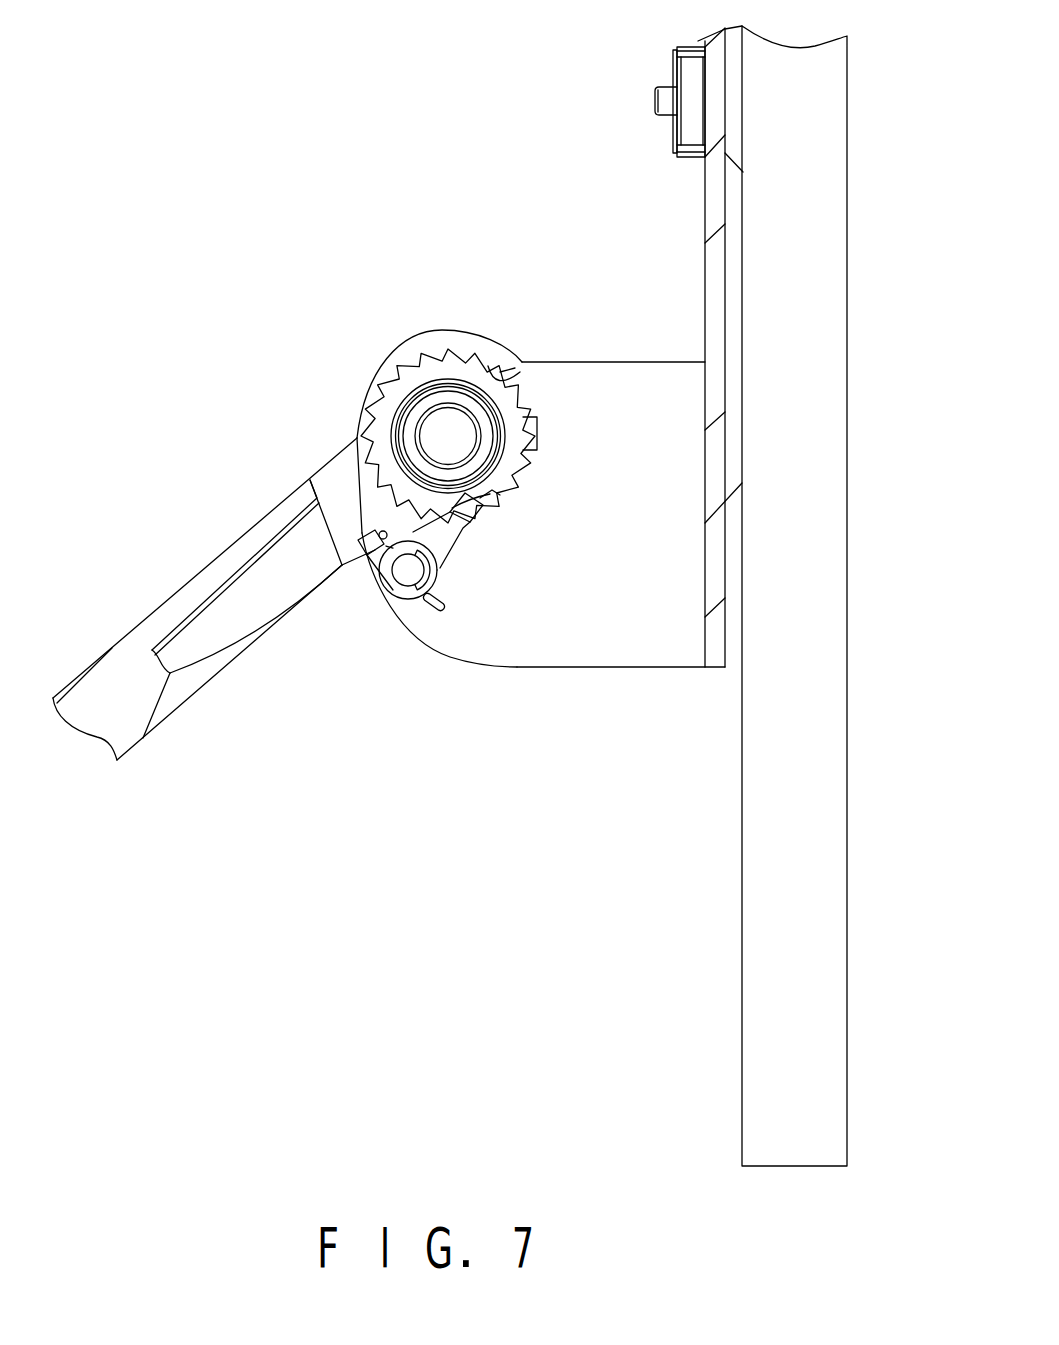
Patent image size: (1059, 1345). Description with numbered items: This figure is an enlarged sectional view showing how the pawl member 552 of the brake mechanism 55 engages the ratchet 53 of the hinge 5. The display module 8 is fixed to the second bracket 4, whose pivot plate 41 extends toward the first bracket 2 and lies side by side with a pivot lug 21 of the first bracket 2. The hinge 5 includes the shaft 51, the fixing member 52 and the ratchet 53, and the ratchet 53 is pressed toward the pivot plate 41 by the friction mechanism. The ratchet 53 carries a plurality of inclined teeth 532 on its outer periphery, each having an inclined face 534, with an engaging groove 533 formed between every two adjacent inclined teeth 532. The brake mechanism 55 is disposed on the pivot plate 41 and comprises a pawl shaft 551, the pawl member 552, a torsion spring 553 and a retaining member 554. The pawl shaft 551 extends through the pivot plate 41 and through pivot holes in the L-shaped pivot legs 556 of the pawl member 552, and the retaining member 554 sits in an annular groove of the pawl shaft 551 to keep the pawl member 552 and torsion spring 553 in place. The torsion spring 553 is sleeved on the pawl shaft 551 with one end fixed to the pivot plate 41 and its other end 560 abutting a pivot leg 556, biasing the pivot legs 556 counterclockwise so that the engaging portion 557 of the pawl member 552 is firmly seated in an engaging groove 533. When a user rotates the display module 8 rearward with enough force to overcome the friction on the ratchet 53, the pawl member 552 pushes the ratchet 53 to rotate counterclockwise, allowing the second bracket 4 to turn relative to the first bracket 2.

The first bracket 2 is at (232, 541).
The pivot lug 21 is at (355, 409).
The second bracket 4 is at (703, 222).
The pivot plate 41 is at (610, 365).
The hinge 5 is at (462, 280).
The display module 8 is at (767, 803).
The shaft 51 is at (437, 432).
The fixing member 52 is at (408, 427).
The ratchet 53 is at (427, 360).
The inclined tooth 532 is at (504, 366).
The engaging groove 533 is at (520, 374).
The inclined face 534 is at (492, 491).
The brake mechanism 55 is at (472, 582).
The pawl shaft 551 is at (408, 573).
The pawl member 552 is at (447, 572).
The torsion spring 553 is at (415, 603).
The retaining member 554 is at (421, 588).
The pivot leg 556 is at (376, 556).
The engaging portion 557 is at (457, 530).
The other end of torsion spring 560 is at (383, 531).